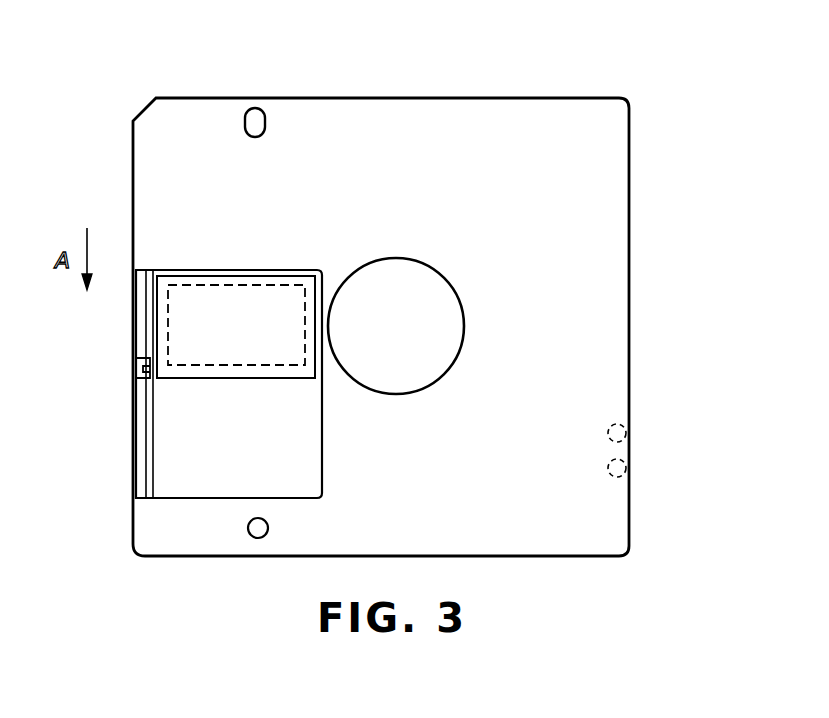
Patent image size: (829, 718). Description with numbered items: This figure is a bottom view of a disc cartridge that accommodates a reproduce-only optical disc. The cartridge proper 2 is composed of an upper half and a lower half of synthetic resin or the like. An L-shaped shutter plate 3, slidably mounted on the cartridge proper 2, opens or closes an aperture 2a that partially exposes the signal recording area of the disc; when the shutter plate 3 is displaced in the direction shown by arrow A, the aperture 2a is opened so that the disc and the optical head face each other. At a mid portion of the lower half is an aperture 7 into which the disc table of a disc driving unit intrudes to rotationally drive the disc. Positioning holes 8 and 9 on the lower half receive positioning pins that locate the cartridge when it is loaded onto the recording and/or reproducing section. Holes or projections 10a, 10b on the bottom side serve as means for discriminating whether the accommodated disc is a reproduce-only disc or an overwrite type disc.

The cartridge proper 2 is at (465, 93).
The aperture 2a is at (243, 290).
The shutter plate 3 is at (188, 368).
The aperture 7 is at (432, 280).
The positioning hole 8 is at (248, 526).
The positioning hole 9 is at (262, 123).
The hole or projection 10a is at (627, 433).
The hole or projection 10b is at (627, 468).